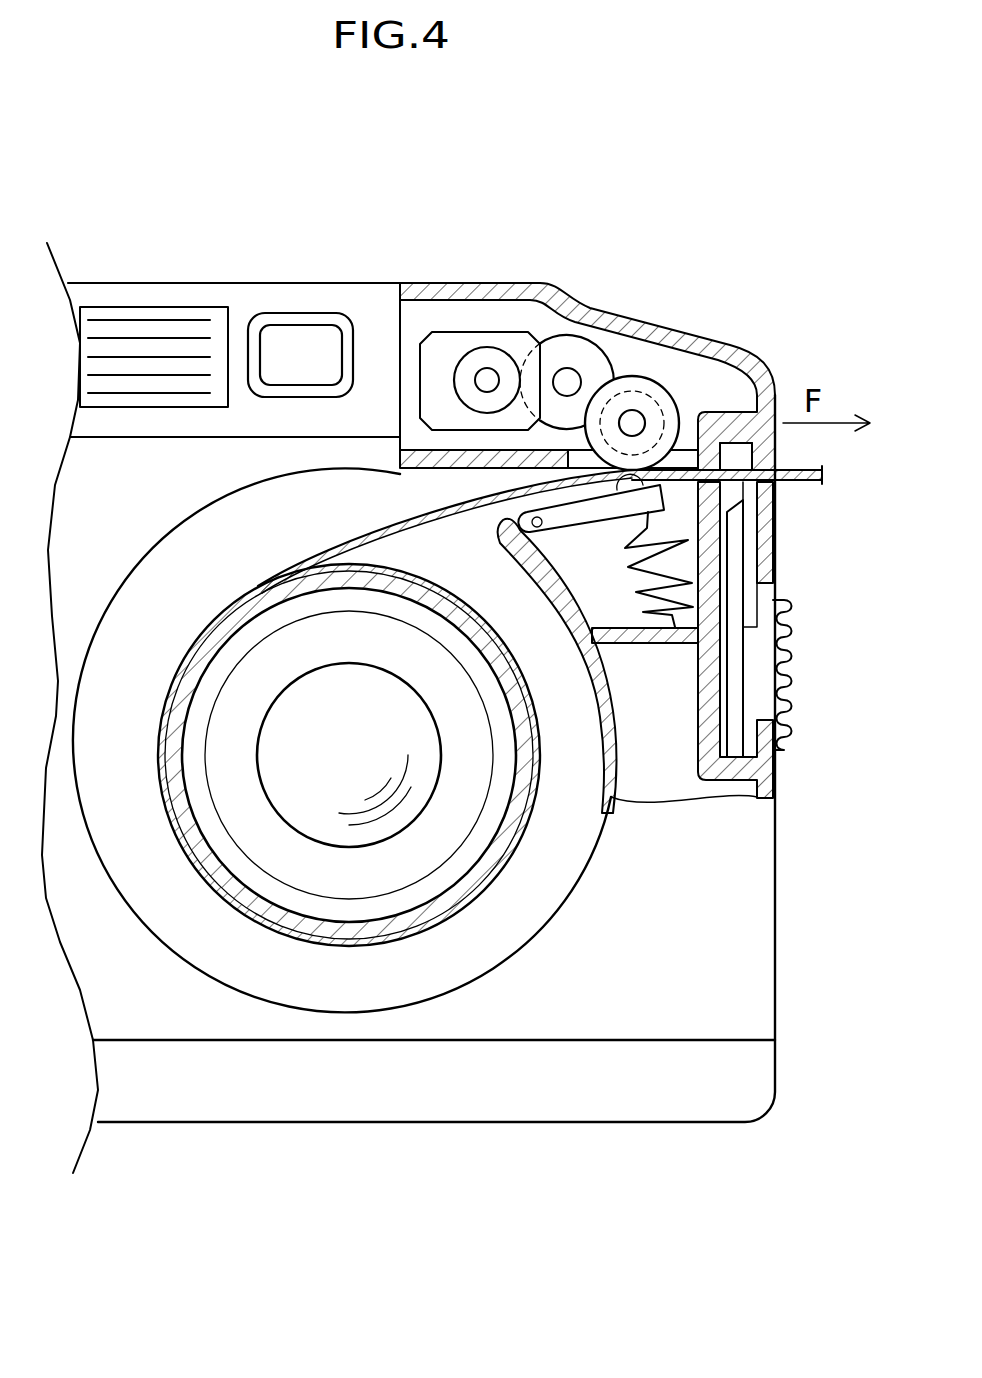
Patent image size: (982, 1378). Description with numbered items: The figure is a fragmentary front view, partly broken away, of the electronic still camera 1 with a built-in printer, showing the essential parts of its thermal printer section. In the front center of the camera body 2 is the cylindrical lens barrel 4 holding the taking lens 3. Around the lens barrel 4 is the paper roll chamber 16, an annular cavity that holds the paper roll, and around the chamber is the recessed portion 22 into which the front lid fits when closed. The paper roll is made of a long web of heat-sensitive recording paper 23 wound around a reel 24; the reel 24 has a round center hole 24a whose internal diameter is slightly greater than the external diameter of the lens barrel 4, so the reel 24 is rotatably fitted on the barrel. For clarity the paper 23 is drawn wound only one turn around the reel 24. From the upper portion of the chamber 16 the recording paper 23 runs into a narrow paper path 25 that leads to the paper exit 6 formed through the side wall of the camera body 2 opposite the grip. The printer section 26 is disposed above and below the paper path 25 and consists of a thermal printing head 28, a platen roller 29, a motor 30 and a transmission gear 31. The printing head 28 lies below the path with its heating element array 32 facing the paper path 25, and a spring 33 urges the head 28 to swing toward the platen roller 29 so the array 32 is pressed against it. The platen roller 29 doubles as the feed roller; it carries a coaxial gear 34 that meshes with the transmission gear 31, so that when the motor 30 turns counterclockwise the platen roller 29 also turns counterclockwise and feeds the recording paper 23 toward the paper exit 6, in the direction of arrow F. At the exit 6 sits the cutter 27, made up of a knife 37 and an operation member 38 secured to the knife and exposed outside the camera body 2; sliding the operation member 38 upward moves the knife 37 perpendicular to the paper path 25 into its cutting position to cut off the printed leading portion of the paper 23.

The electronic still camera 1 is at (141, 268).
The camera body 2 is at (668, 1092).
The taking lens 3 is at (357, 773).
The lens barrel 4 is at (278, 848).
The paper exit 6 is at (775, 452).
The paper roll chamber 16 is at (500, 930).
The recessed portion 22 is at (517, 1012).
The recording paper 23 is at (337, 541).
The reel 24 is at (510, 820).
The center hole 24a is at (160, 760).
The paper path 25 is at (483, 478).
The printer section 26 is at (755, 283).
The cutter 27 is at (868, 858).
The thermal printing head 28 is at (740, 443).
The platen roller 29 is at (636, 377).
The motor 30 is at (456, 343).
The transmission gear 31 is at (584, 358).
The heating element array 32 is at (627, 487).
The spring 33 is at (652, 540).
The gear 34 is at (688, 412).
The knife 37 is at (742, 518).
The operation member 38 is at (782, 677).